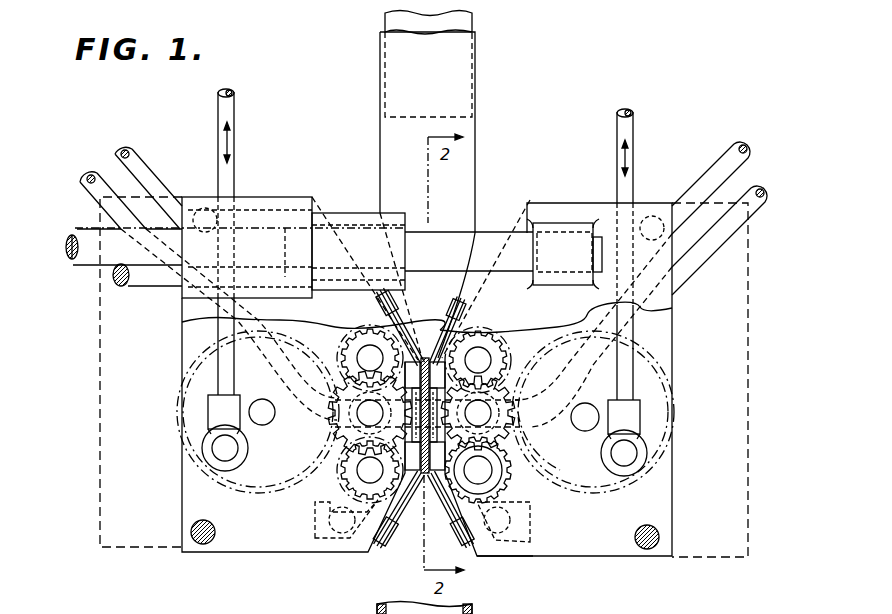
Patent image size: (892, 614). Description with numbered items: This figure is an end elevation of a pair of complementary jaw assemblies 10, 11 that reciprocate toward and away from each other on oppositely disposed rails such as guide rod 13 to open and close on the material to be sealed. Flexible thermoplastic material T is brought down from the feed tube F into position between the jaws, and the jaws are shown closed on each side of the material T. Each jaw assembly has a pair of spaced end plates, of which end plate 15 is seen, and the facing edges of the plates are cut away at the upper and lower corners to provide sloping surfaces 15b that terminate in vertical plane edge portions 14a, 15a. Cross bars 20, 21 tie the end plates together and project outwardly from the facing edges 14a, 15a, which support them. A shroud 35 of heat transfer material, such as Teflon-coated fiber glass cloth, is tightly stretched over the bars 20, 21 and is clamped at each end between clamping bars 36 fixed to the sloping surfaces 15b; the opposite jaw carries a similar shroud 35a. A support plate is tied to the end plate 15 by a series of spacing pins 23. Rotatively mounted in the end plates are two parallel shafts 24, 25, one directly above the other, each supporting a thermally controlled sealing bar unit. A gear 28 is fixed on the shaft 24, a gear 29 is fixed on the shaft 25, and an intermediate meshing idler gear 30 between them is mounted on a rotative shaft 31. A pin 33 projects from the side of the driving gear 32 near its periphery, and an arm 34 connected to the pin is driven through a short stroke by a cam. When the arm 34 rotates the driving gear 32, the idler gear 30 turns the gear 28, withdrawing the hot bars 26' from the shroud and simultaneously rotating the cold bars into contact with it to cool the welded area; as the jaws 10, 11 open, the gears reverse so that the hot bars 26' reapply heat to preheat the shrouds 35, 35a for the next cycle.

The jaw assembly 10 is at (288, 558).
The jaw assembly 11 is at (593, 557).
The guide rod 13 is at (80, 230).
The facing edge 14a is at (413, 427).
The end plate 15 is at (661, 362).
The facing edge 15a is at (448, 517).
The sloping surface 15b is at (483, 574).
The cross bar 20 is at (425, 375).
The cross bar 21 is at (425, 456).
The spacing pin 23 is at (652, 216).
The shaft 24 is at (482, 352).
The shaft 25 is at (478, 470).
The hot bar 26' is at (523, 547).
The gear 28 is at (499, 353).
The gear 29 is at (498, 479).
The idler gear 30 is at (514, 431).
The rotative shaft 31 is at (466, 415).
The driving gear 32 is at (560, 467).
The pin 33 is at (627, 463).
The arm 34 is at (629, 185).
The shroud 35 is at (435, 340).
The shroud 35a is at (400, 325).
The clamping bar 36 is at (459, 310).
The feed tube F is at (385, 23).
The thermoplastic material T is at (478, 82).